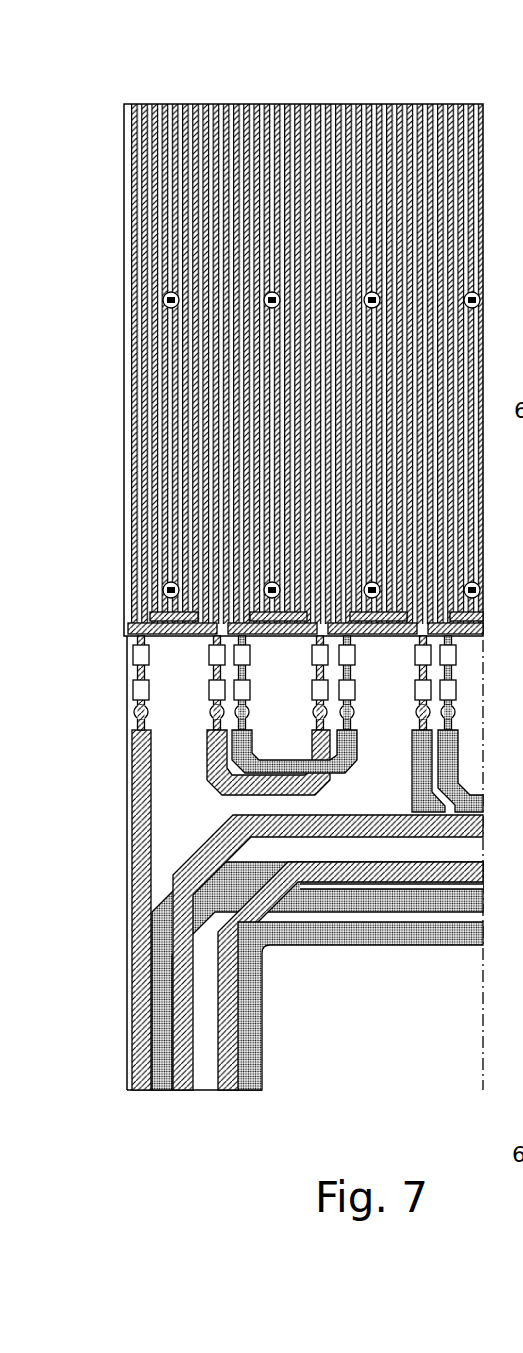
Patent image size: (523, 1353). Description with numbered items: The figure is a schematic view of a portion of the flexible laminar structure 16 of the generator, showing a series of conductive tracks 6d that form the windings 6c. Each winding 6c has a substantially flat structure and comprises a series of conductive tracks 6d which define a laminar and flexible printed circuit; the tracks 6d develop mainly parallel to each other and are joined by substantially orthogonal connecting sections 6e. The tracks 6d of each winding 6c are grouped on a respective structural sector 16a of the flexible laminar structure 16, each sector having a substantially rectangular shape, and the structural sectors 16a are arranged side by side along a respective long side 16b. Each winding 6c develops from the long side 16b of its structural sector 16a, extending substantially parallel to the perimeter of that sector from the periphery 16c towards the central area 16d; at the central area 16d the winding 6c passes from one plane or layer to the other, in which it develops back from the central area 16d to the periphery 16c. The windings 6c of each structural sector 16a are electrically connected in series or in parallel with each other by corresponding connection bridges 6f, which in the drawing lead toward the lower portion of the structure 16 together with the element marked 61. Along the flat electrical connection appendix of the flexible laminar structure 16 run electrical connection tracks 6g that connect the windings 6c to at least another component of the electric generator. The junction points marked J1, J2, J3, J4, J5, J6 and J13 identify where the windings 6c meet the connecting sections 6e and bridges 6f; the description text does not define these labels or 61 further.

The structural sector 16a is at (440, 92).
The conductive track 6d is at (147, 108).
The central area 16d is at (178, 192).
The periphery 16c is at (150, 226).
The long side 16b is at (430, 392).
The winding 6c is at (445, 590).
The connecting section 6e is at (300, 740).
The flexible laminar structure 16 is at (125, 787).
The connection bridge 6f is at (460, 802).
The conductor blocks 61 is at (458, 810).
The electrical connection track 6g is at (250, 1095).
The junction J1 is at (152, 743).
The junction J2 is at (203, 719).
The junction J3 is at (253, 745).
The junction J4 is at (304, 719).
The junction J5 is at (357, 745).
The junction J6 is at (409, 719).
The junction J13 is at (463, 745).